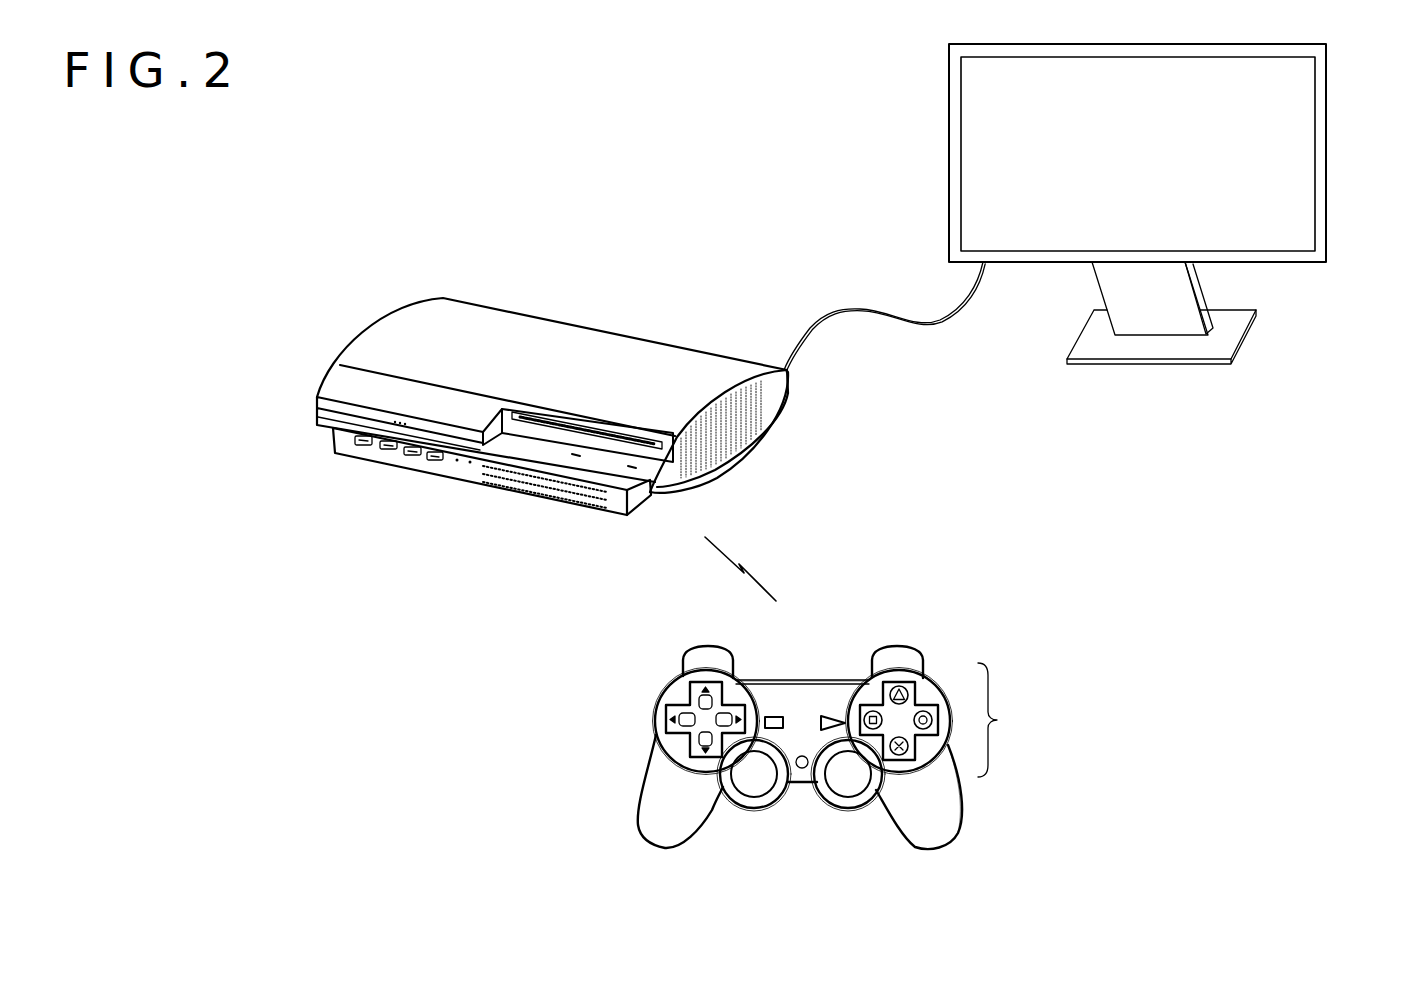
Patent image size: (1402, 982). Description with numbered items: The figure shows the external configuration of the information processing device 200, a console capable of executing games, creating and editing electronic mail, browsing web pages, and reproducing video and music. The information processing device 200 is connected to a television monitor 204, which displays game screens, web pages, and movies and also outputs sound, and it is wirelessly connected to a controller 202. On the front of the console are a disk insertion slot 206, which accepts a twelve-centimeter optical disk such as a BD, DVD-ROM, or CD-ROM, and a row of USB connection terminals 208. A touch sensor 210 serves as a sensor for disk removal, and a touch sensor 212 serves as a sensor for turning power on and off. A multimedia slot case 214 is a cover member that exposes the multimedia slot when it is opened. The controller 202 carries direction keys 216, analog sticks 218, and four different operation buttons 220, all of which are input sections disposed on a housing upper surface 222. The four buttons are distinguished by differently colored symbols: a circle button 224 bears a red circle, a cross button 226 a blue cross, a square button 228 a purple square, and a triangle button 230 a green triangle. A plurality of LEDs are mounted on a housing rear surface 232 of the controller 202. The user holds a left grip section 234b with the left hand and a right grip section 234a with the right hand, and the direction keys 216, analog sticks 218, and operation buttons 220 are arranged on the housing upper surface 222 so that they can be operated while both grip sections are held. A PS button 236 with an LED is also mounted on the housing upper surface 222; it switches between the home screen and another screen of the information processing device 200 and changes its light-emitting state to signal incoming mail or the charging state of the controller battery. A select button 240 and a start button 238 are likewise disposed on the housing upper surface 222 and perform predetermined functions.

The information processing device 200 is at (754, 291).
The controller 202 is at (823, 958).
The television monitor 204 is at (1328, 208).
The disk insertion slot 206 is at (594, 422).
The USB connection terminals 208 is at (428, 463).
The touch sensor 210 is at (628, 502).
The touch sensor 212 is at (678, 493).
The multimedia slot case 214 is at (333, 388).
The direction keys 216 is at (688, 692).
The analog sticks 218 is at (752, 788).
The operation buttons 220 is at (1011, 720).
The housing upper surface 222 is at (793, 690).
The circle button 224 is at (933, 696).
The cross button 226 is at (899, 758).
The square button 228 is at (883, 680).
The triangle button 230 is at (902, 685).
The housing rear surface 232 is at (838, 674).
The right grip section 234a is at (955, 828).
The left grip section 234b is at (652, 828).
The PS button 236 is at (802, 769).
The start button 238 is at (833, 714).
The select button 240 is at (775, 716).